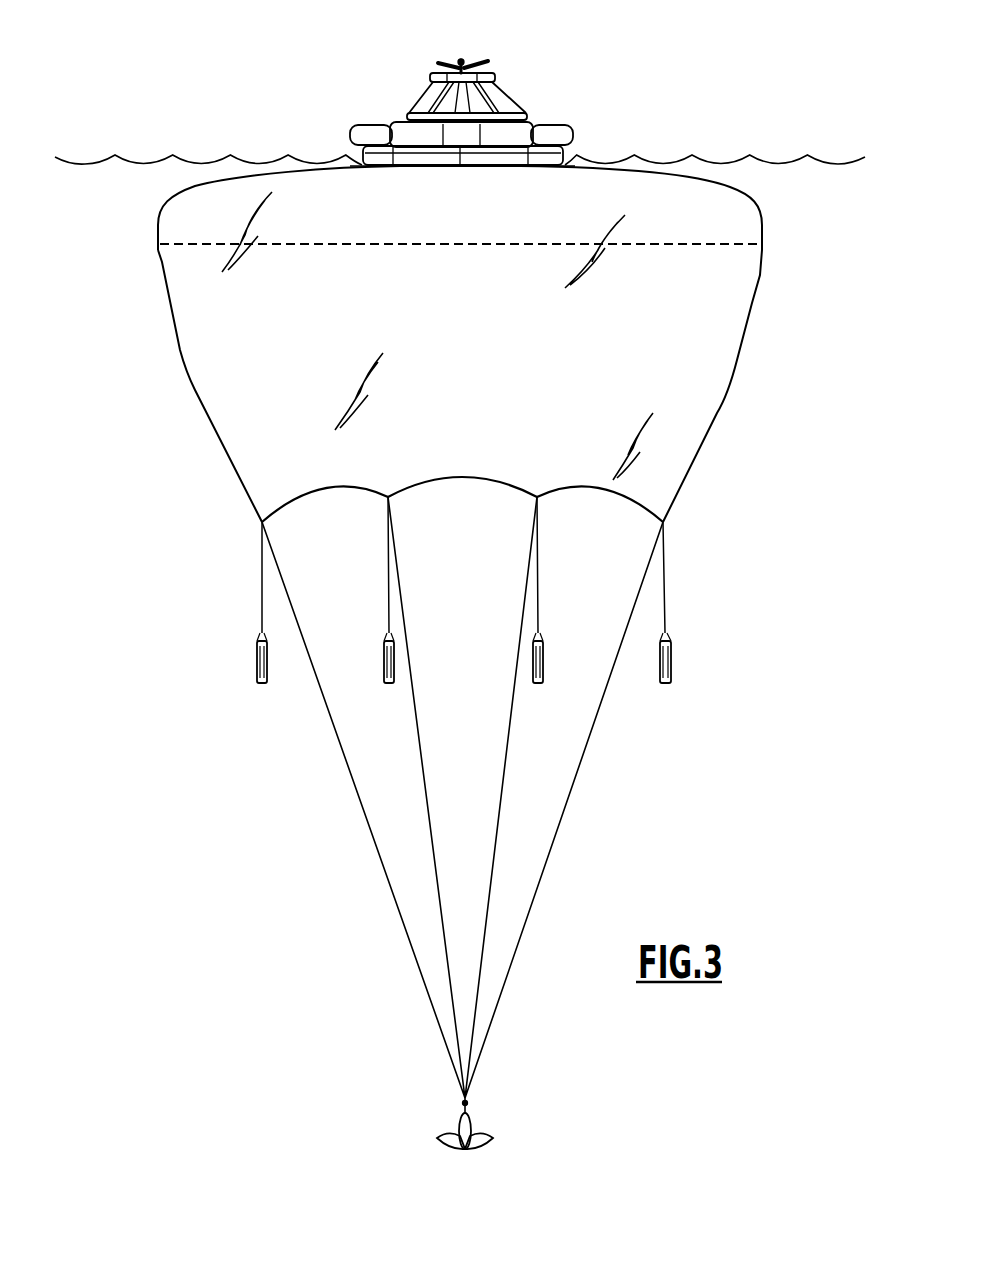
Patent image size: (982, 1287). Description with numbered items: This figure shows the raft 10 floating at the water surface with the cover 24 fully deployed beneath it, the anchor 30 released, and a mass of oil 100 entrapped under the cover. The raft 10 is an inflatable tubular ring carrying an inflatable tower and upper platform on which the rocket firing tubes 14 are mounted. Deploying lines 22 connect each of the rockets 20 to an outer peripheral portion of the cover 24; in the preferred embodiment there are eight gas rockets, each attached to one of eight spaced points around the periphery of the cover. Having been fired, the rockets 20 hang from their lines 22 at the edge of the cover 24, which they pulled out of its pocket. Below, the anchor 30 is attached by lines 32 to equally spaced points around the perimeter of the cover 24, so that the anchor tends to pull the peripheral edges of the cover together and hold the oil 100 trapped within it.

The raft 10 is at (585, 128).
The rocket firing tubes 14 is at (474, 52).
The mass of oil 100 is at (486, 220).
The cover 24 is at (183, 405).
The deploying lines 22 is at (664, 582).
The rockets 20 is at (242, 665).
The lines 32 is at (580, 762).
The anchor 30 is at (470, 1120).